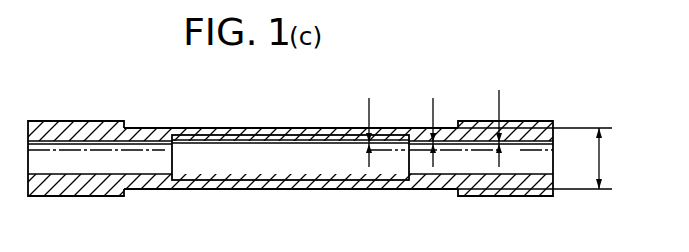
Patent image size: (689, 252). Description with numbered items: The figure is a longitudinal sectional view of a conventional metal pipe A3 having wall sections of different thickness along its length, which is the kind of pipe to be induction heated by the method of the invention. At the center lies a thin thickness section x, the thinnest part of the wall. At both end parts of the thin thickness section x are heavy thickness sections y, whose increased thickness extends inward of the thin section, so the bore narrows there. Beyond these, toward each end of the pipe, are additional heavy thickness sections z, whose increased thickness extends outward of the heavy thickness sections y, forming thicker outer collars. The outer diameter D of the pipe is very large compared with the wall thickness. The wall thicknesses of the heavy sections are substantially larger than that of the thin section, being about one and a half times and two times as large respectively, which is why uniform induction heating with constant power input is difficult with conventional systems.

The additional heavy thickness section z is at (72, 128).
The heavy thickness section y is at (158, 131).
The thin thickness section x is at (214, 132).
The metal pipe A3 is at (270, 110).
The outer diameter D is at (535, 158).